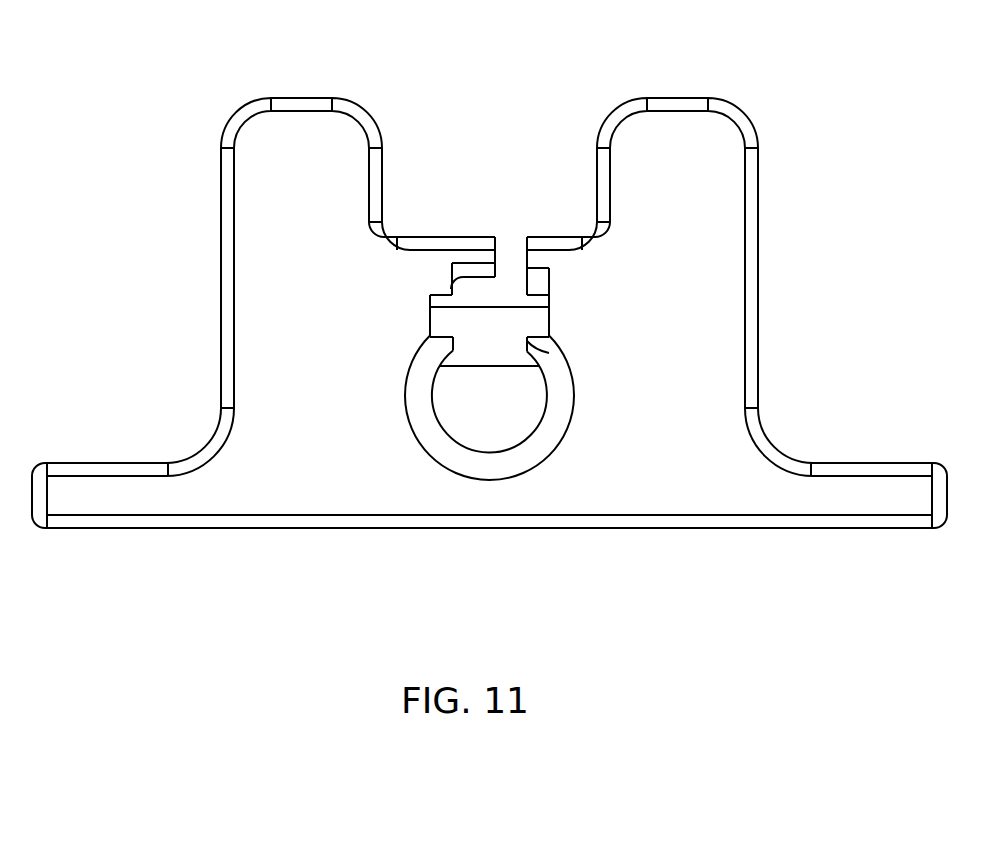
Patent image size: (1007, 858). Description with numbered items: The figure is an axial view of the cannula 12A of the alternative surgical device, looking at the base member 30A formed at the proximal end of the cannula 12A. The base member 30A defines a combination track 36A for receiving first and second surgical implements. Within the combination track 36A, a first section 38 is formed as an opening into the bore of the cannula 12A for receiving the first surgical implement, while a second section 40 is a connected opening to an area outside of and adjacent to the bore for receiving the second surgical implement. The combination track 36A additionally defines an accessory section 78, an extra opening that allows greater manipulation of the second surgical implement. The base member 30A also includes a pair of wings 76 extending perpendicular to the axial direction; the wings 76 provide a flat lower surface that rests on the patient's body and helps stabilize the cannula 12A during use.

The cannula 12A is at (185, 320).
The base member 30A is at (708, 307).
The wings 76 is at (655, 128).
The second section 40 is at (502, 318).
The first section 38 is at (432, 432).
The combination track 36A is at (500, 427).
The accessory section 78 is at (540, 316).